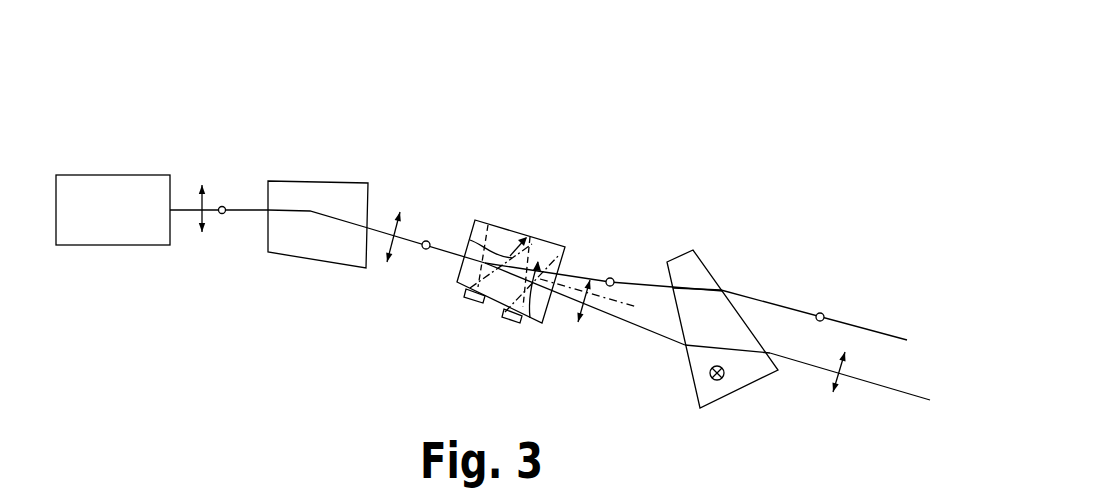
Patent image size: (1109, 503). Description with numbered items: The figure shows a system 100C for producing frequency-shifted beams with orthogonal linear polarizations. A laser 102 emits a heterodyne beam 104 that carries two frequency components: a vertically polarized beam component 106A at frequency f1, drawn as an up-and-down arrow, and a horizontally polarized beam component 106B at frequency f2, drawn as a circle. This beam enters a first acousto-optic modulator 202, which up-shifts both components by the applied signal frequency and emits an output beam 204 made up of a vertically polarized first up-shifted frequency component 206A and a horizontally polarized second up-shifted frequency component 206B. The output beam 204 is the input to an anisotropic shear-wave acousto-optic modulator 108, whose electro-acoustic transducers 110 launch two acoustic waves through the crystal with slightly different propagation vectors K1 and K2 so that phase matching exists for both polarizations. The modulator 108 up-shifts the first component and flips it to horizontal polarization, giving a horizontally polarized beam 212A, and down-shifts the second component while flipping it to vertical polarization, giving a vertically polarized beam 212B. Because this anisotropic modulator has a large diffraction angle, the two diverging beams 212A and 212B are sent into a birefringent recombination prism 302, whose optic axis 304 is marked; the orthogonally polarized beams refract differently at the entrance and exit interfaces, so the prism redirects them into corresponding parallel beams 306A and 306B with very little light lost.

The system 100C is at (248, 58).
The laser light source 102 is at (118, 175).
The heterodyne beam 104 is at (183, 210).
The beam component 106A is at (198, 212).
The beam component 106B is at (222, 214).
The acousto-optic modulator 202 is at (291, 181).
The output beam 204 is at (379, 226).
The first up-shifted frequency component 206A is at (385, 227).
The second up-shifted frequency component 206B is at (430, 240).
The acousto-optic modulator 108 is at (457, 273).
The electro-acoustic transducers 110 is at (509, 322).
The acoustic wave propagation vector K1 is at (485, 243).
The acoustic wave propagation vector K2 is at (530, 318).
The horizontally polarized beam 212A is at (613, 278).
The vertically polarized beam 212B is at (582, 302).
The birefringent recombination prism 302 is at (695, 252).
The optic axis 304 is at (707, 383).
The parallel beam 306A is at (820, 313).
The parallel beam 306B is at (843, 372).